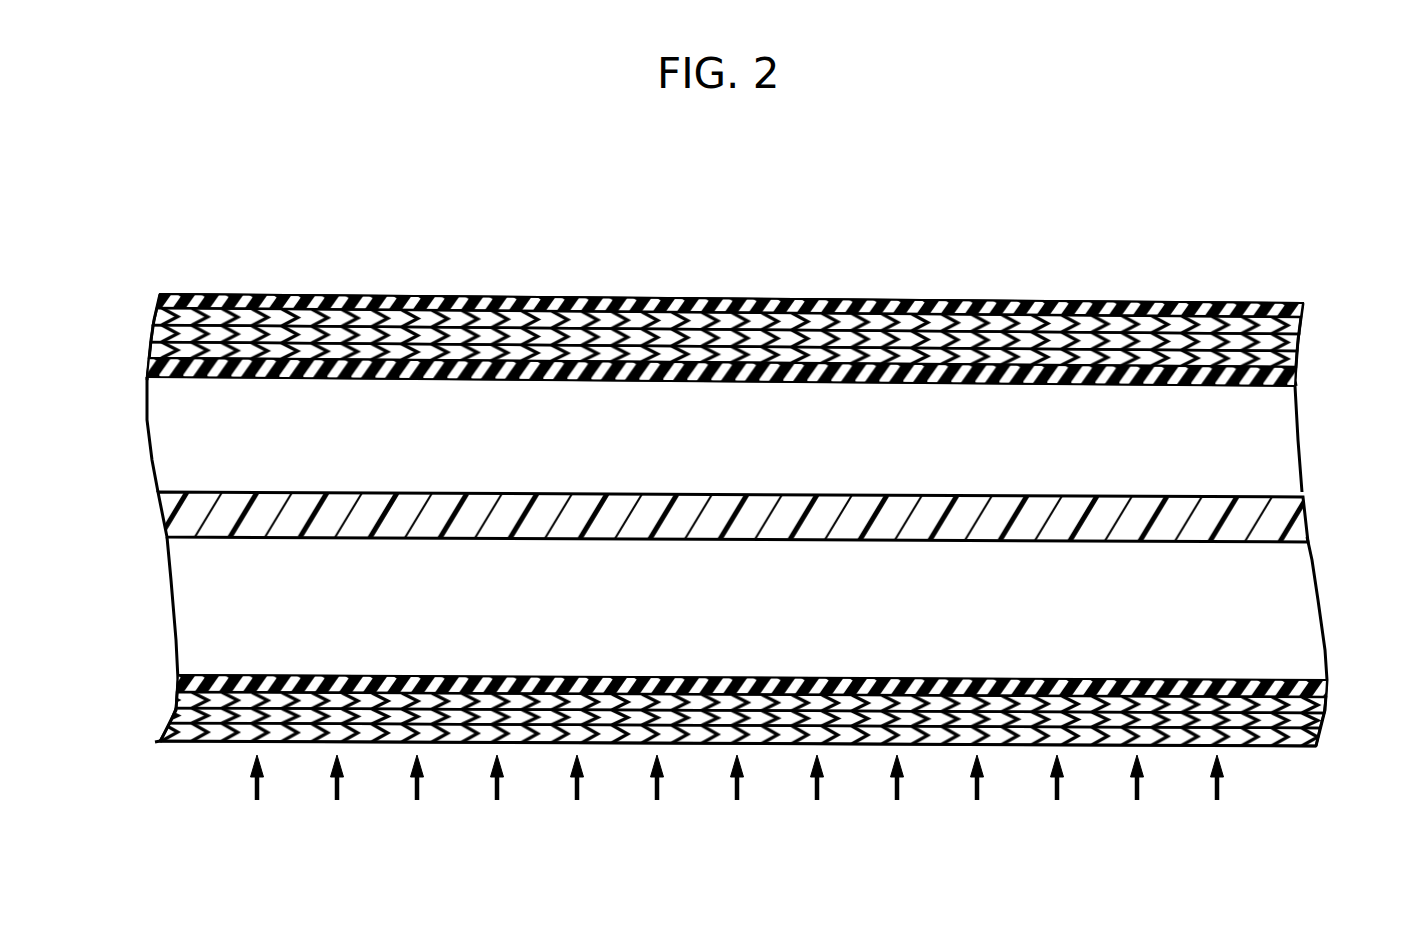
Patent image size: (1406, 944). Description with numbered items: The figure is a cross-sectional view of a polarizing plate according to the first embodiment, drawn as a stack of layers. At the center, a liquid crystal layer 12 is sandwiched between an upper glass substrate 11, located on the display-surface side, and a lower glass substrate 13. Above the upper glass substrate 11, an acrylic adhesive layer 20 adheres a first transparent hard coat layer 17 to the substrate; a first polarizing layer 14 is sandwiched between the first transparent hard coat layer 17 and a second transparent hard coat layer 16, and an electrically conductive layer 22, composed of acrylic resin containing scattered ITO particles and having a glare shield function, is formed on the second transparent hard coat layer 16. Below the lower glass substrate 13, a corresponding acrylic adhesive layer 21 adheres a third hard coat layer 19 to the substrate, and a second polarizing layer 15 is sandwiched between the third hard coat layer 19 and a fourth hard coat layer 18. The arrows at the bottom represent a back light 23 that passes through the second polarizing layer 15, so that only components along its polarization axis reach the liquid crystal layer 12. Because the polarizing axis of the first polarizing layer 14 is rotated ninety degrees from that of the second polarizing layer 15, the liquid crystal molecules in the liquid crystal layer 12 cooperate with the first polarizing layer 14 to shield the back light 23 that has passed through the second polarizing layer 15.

The upper glass substrate 11 is at (1278, 448).
The liquid crystal layer 12 is at (1305, 517).
The lower glass substrate 13 is at (1302, 618).
The first polarizing layer 14 is at (733, 333).
The second polarizing layer 15 is at (733, 712).
The second transparent hard coat layer 16 is at (167, 320).
The first transparent hard coat layer 17 is at (152, 345).
The fourth hard coat layer 18 is at (170, 727).
The third hard coat layer 19 is at (178, 700).
The acrylic adhesive layer 20 is at (1285, 374).
The acrylic adhesive layer 21 is at (1312, 690).
The electrically conductive layer 22 is at (1297, 313).
The back light 23 is at (1235, 785).